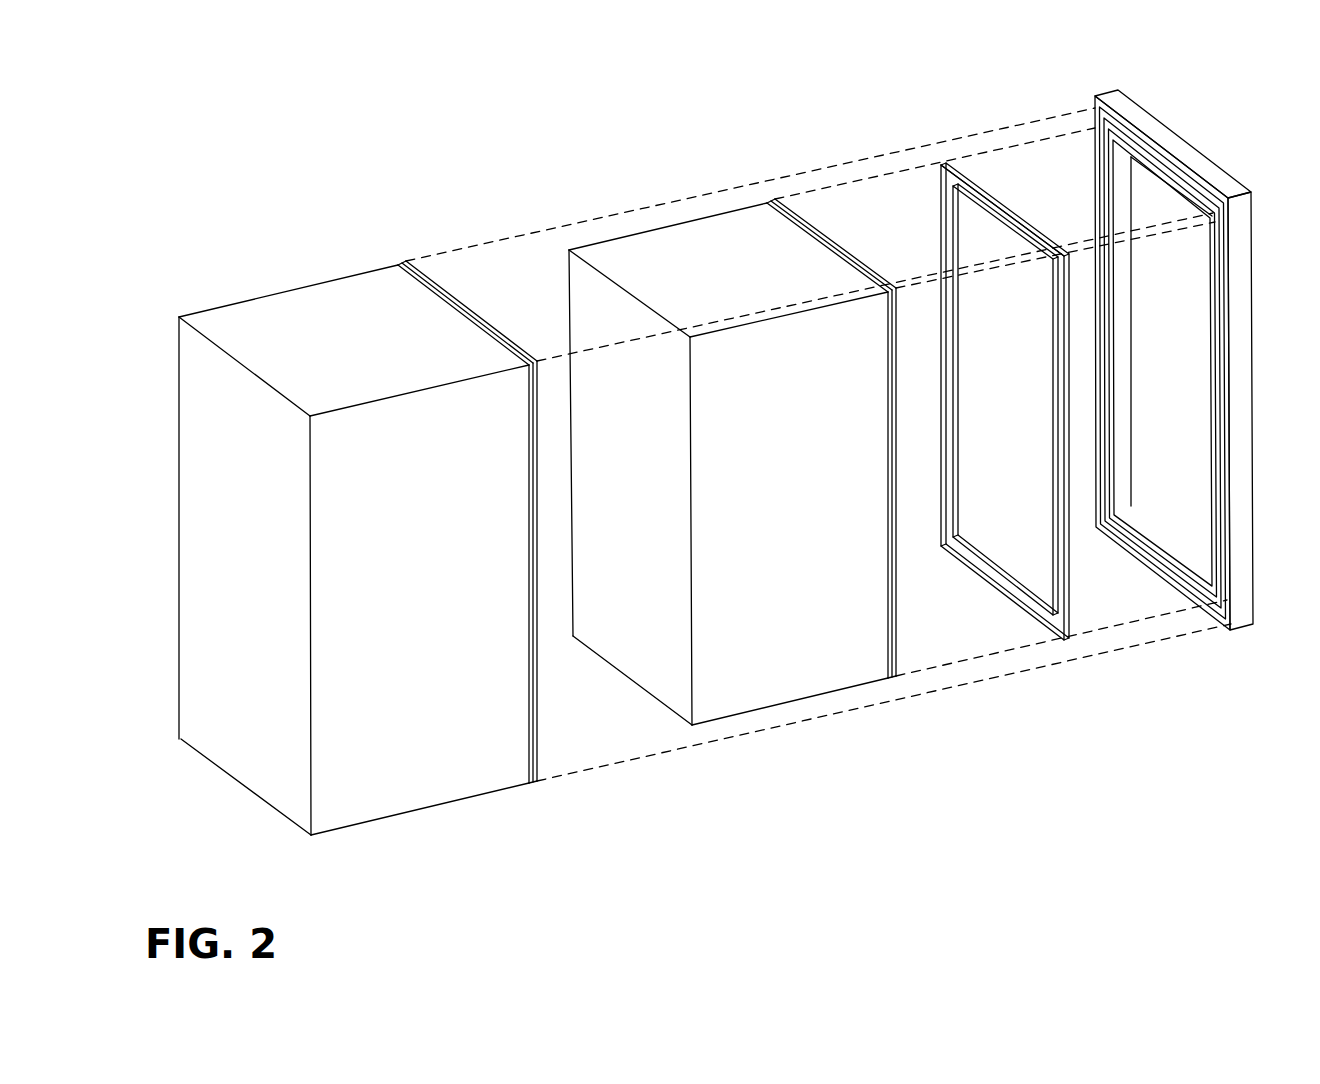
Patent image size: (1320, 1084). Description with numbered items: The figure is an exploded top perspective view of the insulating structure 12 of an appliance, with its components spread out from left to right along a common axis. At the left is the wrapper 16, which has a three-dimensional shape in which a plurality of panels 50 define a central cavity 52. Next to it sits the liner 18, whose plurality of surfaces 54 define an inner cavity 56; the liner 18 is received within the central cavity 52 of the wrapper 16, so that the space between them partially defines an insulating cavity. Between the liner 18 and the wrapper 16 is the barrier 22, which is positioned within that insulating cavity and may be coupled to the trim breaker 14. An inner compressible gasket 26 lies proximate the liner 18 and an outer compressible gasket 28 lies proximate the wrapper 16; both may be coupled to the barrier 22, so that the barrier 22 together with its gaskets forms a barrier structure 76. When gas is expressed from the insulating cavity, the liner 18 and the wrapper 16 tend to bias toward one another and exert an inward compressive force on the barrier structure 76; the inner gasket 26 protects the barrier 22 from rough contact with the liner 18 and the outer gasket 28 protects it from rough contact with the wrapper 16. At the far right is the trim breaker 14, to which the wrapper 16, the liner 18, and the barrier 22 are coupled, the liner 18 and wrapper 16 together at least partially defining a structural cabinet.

The insulating structure 12 is at (378, 133).
The trim breaker 14 is at (1162, 143).
The wrapper 16 is at (377, 531).
The liner 18 is at (782, 470).
The barrier 22 is at (1029, 389).
The inner compressible gasket 26 is at (1016, 592).
The outer compressible gasket 28 is at (1068, 614).
The panels 50 is at (358, 264).
The central cavity 52 is at (547, 710).
The surfaces 54 is at (739, 203).
The inner cavity 56 is at (903, 604).
The barrier structure 76 is at (985, 178).